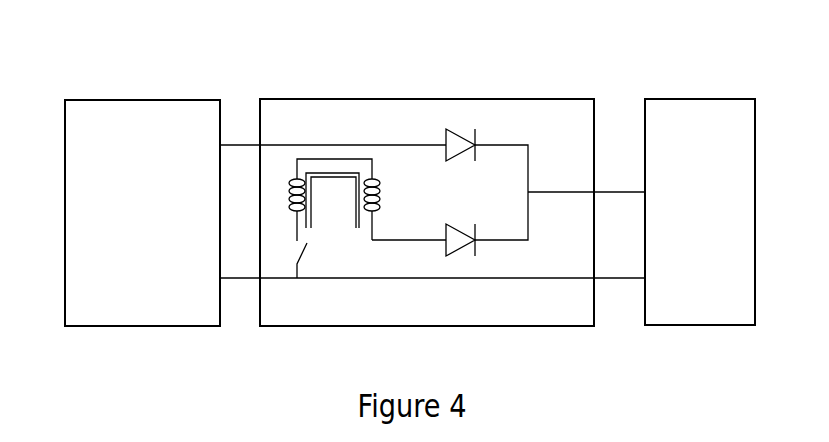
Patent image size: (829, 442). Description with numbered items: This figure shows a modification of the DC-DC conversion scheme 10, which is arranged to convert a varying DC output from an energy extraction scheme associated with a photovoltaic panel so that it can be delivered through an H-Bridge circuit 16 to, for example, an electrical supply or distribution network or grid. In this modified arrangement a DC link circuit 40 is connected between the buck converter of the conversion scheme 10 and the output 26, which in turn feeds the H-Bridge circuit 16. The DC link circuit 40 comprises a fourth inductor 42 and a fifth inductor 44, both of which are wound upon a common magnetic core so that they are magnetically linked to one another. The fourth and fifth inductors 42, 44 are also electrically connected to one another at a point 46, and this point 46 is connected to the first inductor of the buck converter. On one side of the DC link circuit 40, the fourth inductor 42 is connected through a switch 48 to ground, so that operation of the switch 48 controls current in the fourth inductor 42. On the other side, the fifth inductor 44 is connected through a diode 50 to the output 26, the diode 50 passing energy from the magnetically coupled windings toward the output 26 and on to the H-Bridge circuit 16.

The DC-DC conversion scheme 10 is at (161, 88).
The H-Bridge circuit 16 is at (702, 99).
The output 26 is at (607, 175).
The DC link circuit 40 is at (550, 86).
The fourth inductor 42 is at (278, 189).
The fifth inductor 44 is at (391, 188).
The point 46 is at (341, 147).
The switch 48 is at (315, 266).
The diode 50 is at (490, 220).